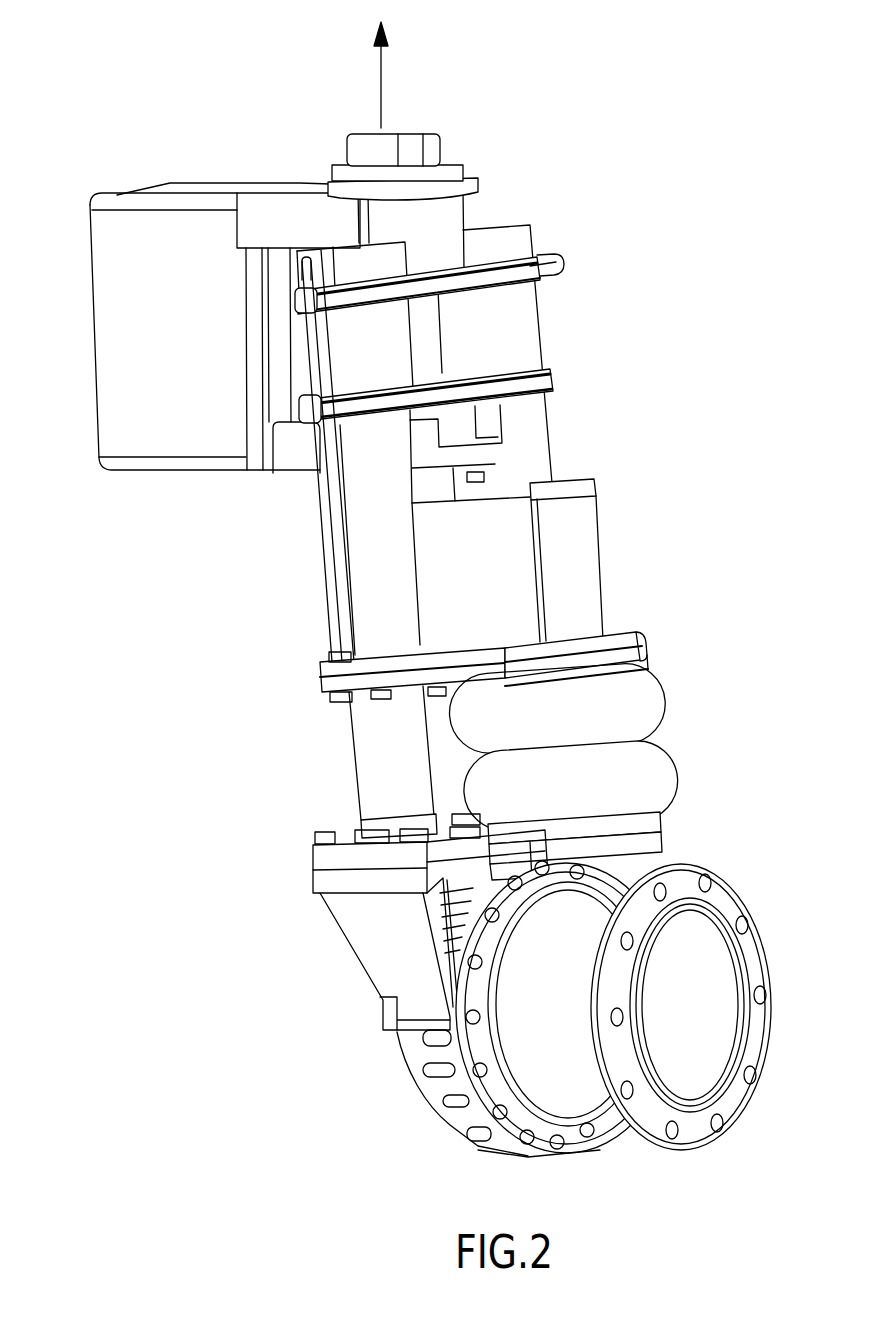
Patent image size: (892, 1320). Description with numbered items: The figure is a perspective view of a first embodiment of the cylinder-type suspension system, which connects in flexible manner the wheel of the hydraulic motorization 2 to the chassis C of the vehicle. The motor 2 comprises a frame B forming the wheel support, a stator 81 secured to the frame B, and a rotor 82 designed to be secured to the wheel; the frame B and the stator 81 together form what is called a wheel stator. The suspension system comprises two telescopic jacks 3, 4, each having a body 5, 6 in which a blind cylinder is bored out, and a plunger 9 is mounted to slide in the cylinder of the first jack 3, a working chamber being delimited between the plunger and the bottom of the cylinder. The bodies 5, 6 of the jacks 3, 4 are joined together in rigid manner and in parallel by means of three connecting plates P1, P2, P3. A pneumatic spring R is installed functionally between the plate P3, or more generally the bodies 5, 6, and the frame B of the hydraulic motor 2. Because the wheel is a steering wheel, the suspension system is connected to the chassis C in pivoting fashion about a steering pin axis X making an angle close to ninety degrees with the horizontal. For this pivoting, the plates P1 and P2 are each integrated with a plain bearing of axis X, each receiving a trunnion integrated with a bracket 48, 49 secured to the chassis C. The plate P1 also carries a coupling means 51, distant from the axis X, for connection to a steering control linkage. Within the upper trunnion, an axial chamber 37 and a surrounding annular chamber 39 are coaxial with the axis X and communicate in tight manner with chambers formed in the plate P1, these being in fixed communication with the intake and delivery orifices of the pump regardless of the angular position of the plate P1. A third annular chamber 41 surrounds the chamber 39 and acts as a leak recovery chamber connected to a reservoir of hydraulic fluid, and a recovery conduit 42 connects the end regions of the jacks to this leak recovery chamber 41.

The hydraulic motorization 2 is at (420, 1154).
The telescopic jack 3 is at (312, 603).
The telescopic jack 4 is at (560, 436).
The body 5 is at (322, 538).
The body 6 is at (528, 473).
The plunger 9 is at (352, 752).
The axial chamber 37 is at (400, 133).
The annular chamber 39 is at (446, 166).
The third annular chamber 41 is at (474, 185).
The recovery conduit 42 is at (337, 490).
The bracket 48 is at (290, 188).
The bracket 49 is at (288, 448).
The coupling means 51 is at (537, 255).
The stator 81 is at (553, 1157).
The rotor 82 is at (687, 1150).
The frame B is at (400, 1046).
The chassis C is at (138, 340).
The connecting plate P1 is at (542, 280).
The connecting plate P2 is at (556, 390).
The connecting plate P3 is at (327, 682).
The pneumatic spring R is at (623, 780).
The steering pin axis X is at (389, 77).